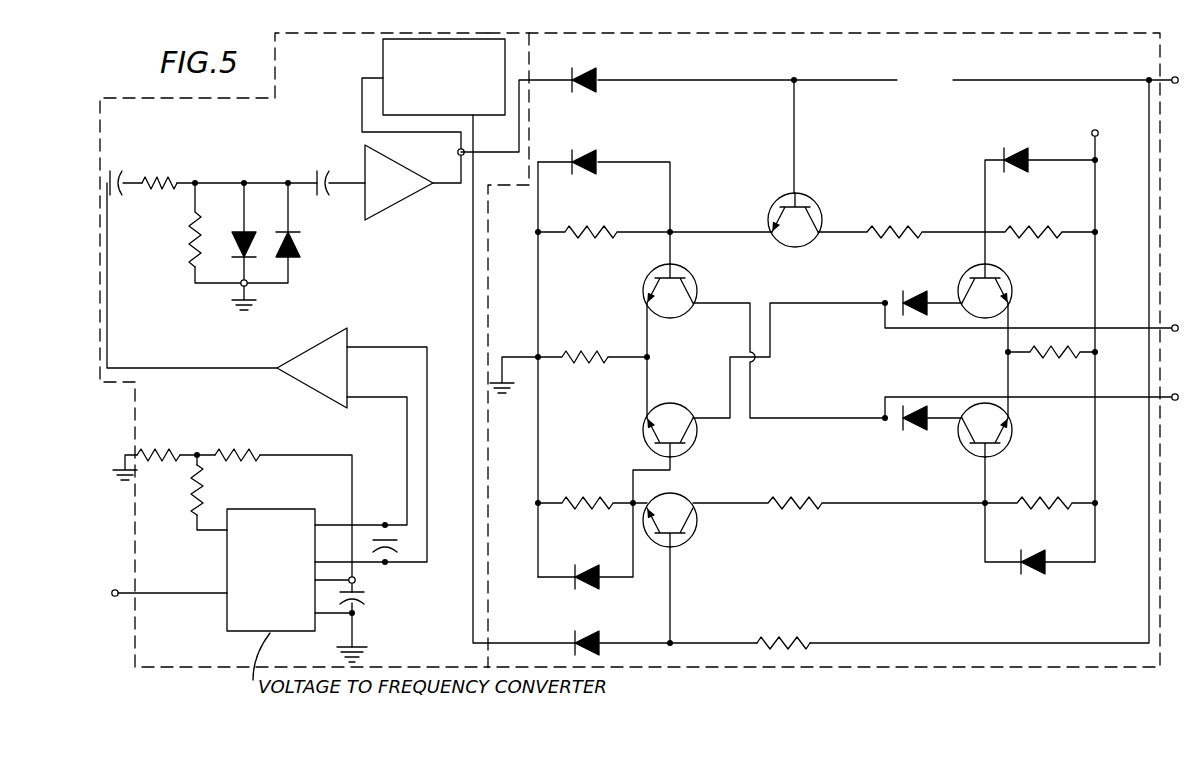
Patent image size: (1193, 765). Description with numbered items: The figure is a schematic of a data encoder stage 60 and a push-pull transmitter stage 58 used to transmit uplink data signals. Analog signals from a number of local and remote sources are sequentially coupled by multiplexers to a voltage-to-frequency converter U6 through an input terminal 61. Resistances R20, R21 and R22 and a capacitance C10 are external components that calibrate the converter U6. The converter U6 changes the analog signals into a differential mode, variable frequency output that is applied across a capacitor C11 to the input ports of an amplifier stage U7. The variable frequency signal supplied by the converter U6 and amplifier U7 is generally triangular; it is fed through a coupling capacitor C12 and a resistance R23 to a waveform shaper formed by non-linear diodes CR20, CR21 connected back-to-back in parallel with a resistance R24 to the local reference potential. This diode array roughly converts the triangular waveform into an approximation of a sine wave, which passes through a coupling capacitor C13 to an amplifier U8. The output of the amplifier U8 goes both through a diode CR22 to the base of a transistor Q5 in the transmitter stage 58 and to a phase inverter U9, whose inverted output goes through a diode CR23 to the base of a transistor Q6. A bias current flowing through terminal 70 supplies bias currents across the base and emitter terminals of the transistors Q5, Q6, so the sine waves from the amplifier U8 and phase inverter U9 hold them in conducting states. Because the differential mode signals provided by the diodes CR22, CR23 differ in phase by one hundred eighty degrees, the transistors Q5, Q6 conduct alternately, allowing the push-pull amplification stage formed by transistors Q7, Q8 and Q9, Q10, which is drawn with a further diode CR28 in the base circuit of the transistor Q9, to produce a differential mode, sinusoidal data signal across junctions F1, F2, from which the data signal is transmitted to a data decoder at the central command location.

The data encoder stage 60 is at (163, 667).
The push-pull transmitter stage 58 is at (820, 667).
The input terminal 61 is at (178, 594).
The terminal 70 is at (1175, 84).
The junction F1 is at (1033, 313).
The junction F2 is at (1031, 393).
The capacitance C10 is at (372, 599).
The capacitor C11 is at (382, 525).
The coupling capacitor C12 is at (125, 194).
The coupling capacitor C13 is at (309, 148).
The resistance R20 is at (214, 490).
The resistance R21 is at (237, 444).
The resistance R22 is at (158, 444).
The resistance R23 is at (179, 158).
The resistance R24 is at (193, 249).
The non-linear diode CR20 is at (249, 232).
The non-linear diode CR21 is at (298, 252).
The diode CR22 is at (600, 70).
The diode CR23 is at (600, 632).
The diode CR28 is at (924, 296).
The voltage-to-frequency converter U6 is at (227, 622).
The amplifier stage U7 is at (328, 379).
The amplifier U8 is at (397, 192).
The phase inverter U9 is at (383, 59).
The transistor Q5 is at (806, 195).
The transistor Q6 is at (688, 532).
The transistor Q7 is at (684, 274).
The transistor Q8 is at (688, 440).
The transistor Q9 is at (1002, 278).
The transistor Q10 is at (1004, 444).